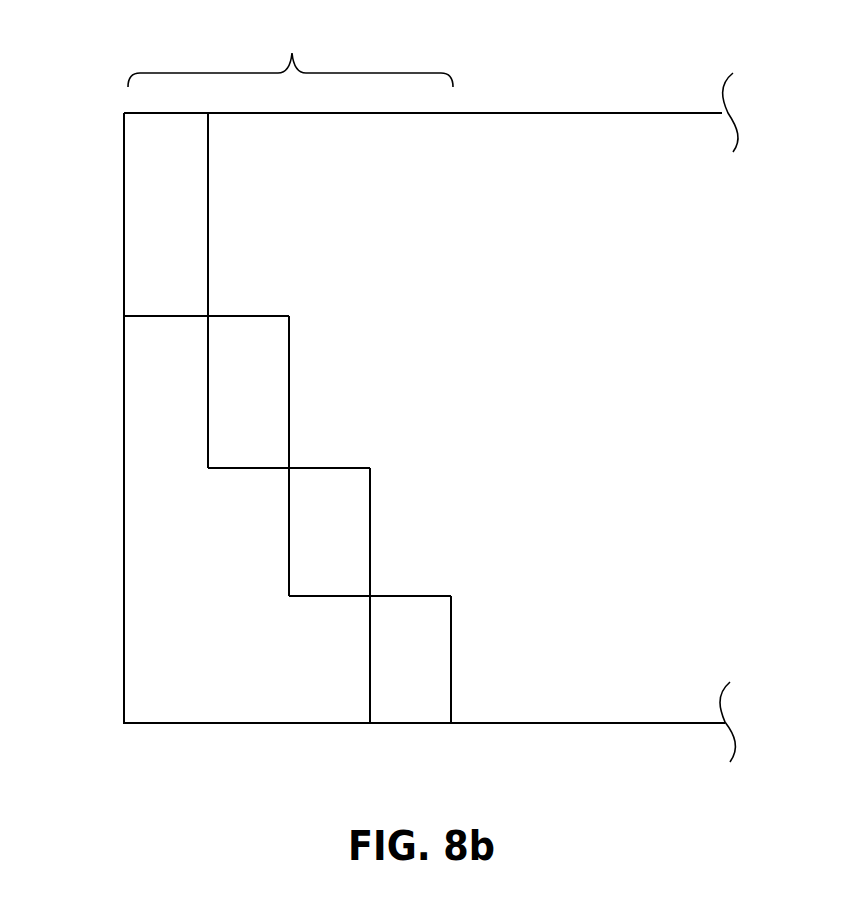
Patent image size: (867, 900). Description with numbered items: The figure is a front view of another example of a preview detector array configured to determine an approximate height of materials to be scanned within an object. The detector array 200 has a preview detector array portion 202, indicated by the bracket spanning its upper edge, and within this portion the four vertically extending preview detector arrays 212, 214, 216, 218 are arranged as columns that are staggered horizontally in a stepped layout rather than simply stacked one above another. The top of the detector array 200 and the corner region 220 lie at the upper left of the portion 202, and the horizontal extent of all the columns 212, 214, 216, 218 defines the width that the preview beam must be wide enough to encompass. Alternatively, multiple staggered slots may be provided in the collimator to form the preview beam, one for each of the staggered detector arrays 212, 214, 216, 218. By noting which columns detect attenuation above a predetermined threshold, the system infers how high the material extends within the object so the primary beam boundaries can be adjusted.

The detector array 200 is at (611, 113).
The preview detector array portion 202 is at (290, 57).
The preview detector array 212 is at (187, 213).
The preview detector array 214 is at (268, 383).
The preview detector array 216 is at (353, 527).
The preview detector array 218 is at (430, 655).
The corner 220 is at (167, 111).